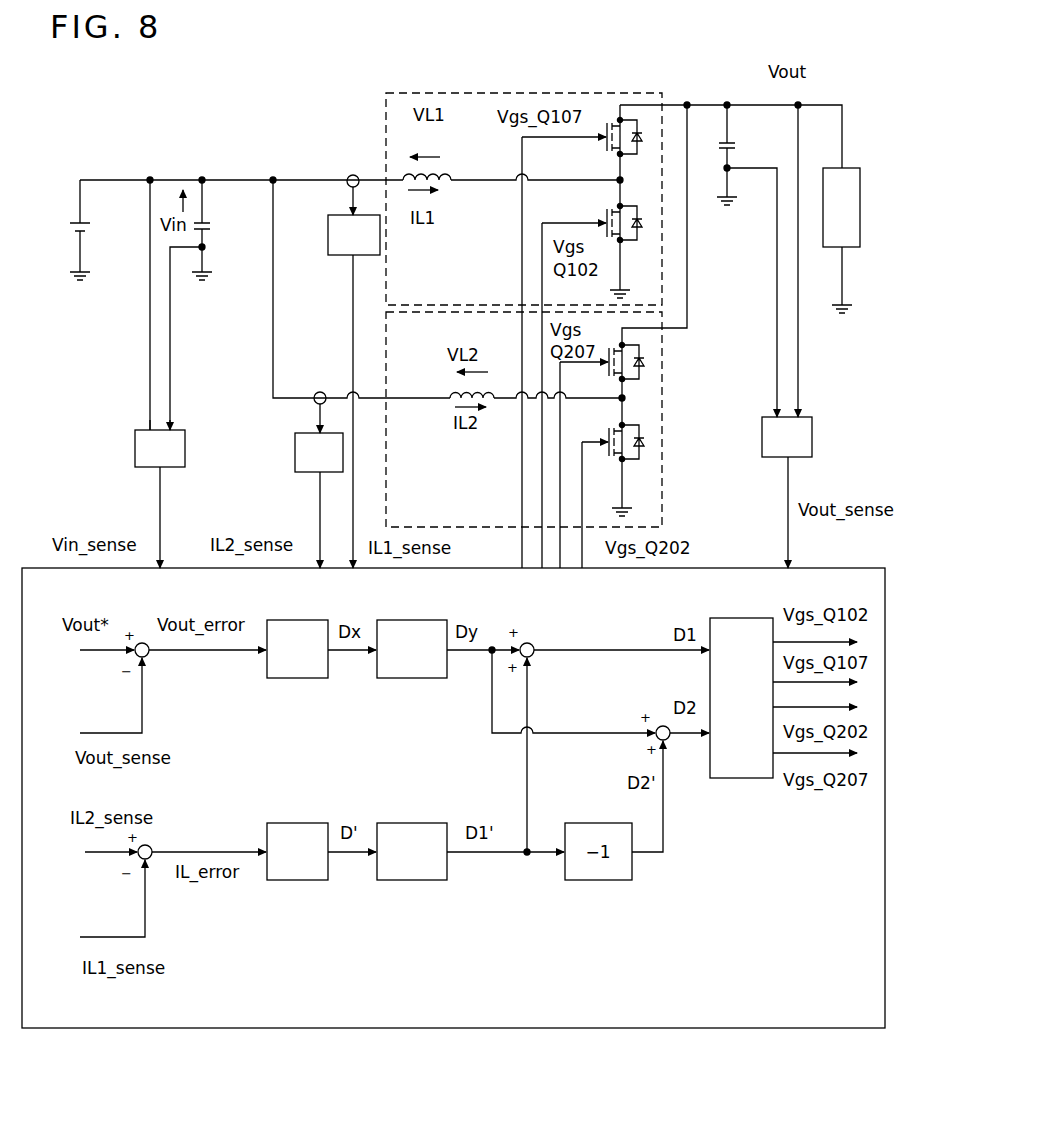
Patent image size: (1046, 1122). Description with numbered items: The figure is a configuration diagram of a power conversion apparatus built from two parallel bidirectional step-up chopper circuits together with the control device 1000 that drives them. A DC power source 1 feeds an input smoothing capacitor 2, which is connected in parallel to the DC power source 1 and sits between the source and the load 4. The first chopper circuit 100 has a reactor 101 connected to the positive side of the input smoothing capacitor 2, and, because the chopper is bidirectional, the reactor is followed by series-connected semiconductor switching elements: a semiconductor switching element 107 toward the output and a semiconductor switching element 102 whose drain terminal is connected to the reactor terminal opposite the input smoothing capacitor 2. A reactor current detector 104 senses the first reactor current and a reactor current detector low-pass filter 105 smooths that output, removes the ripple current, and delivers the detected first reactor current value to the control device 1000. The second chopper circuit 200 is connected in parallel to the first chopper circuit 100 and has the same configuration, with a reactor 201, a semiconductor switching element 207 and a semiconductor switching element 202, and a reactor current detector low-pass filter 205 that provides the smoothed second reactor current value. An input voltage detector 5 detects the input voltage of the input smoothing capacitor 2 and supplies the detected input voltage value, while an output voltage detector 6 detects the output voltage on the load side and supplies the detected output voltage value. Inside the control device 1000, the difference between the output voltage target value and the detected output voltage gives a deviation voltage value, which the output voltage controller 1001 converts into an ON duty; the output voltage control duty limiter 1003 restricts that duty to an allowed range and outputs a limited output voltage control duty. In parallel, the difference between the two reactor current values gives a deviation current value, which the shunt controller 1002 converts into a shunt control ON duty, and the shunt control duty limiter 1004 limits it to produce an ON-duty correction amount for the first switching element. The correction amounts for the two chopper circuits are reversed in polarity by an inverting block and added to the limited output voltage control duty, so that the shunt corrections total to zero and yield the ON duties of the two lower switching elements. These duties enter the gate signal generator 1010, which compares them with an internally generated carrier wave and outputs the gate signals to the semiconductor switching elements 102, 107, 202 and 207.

The DC power source 1 is at (76, 230).
The input smoothing capacitor 2 is at (210, 226).
The load 4 is at (860, 197).
The input voltage detector 5 is at (186, 440).
The output voltage detector 6 is at (812, 420).
The first chopper circuit 100 is at (652, 92).
The reactor 101 is at (450, 178).
The semiconductor switching element 102 is at (643, 223).
The reactor current detector 104 is at (357, 174).
The reactor current detector low-pass filter 105 is at (332, 255).
The semiconductor switching element 107 is at (610, 110).
The second chopper circuit 200 is at (667, 487).
The reactor 201 is at (450, 397).
The semiconductor switching element 202 is at (648, 401).
The reactor current detector low-pass filter 205 is at (294, 463).
The semiconductor switching element 207 is at (648, 354).
The control device 1000 is at (350, 1028).
The output voltage controller 1001 is at (280, 678).
The shunt controller 1002 is at (297, 888).
The output voltage control duty limiter 1003 is at (394, 678).
The shunt control duty limiter 1004 is at (417, 888).
The gate signal generator 1010 is at (755, 788).